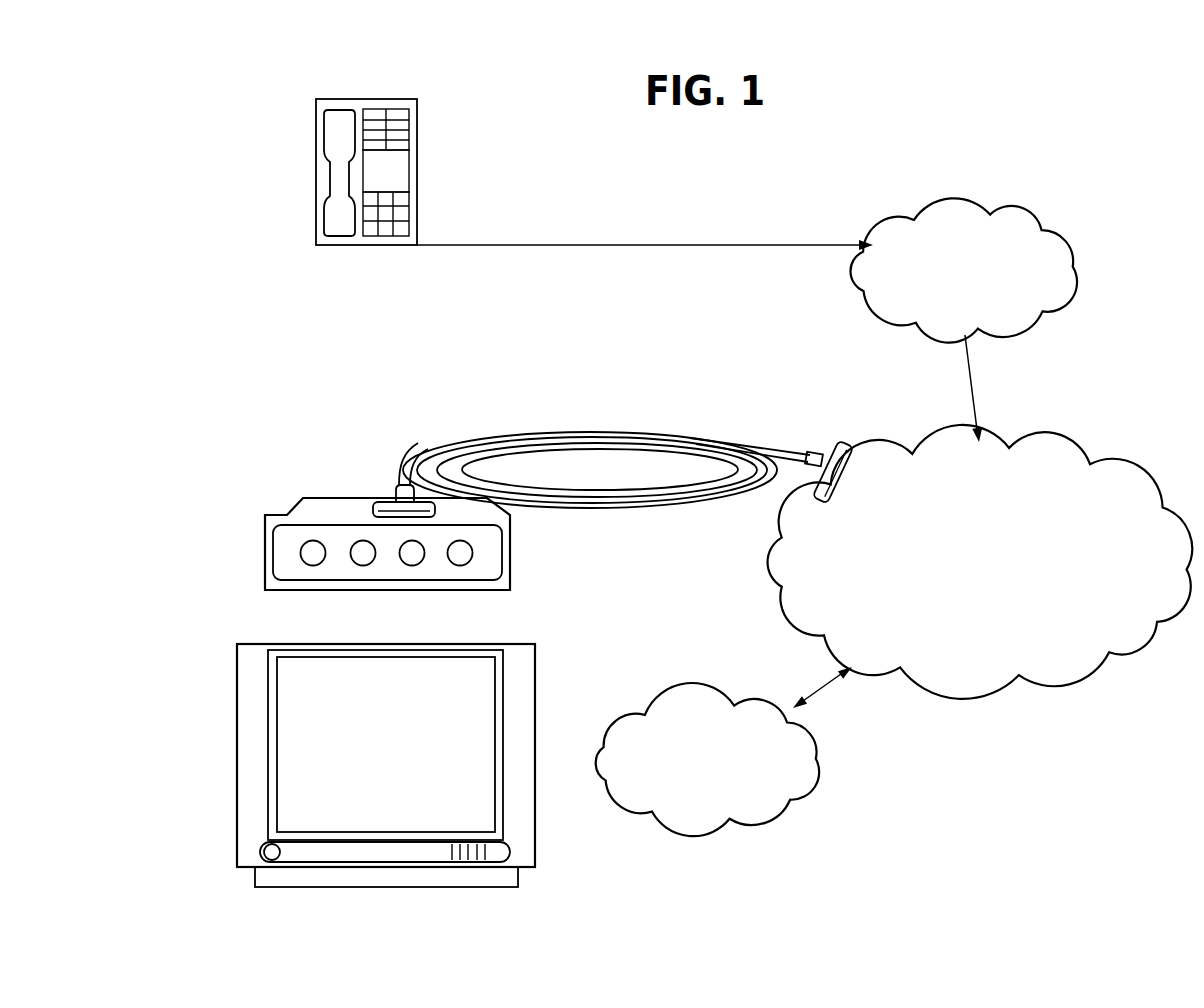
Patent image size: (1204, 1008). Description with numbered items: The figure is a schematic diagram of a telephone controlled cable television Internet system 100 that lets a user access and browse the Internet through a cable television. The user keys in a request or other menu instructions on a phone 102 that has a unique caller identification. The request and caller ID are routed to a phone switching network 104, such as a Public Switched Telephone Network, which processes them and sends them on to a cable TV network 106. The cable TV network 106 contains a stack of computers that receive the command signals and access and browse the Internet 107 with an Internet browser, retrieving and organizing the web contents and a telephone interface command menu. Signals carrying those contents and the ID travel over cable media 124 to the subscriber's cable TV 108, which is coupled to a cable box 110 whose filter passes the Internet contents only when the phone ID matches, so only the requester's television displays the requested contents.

The telephone controlled cable television Internet system 100 is at (810, 176).
The phone 102 is at (418, 127).
The phone switching network 104 is at (1072, 252).
The cable TV network 106 is at (1140, 496).
The Internet 107 is at (722, 700).
The cable TV 108 is at (537, 708).
The cable box 110 is at (335, 498).
The cable media 124 is at (597, 431).